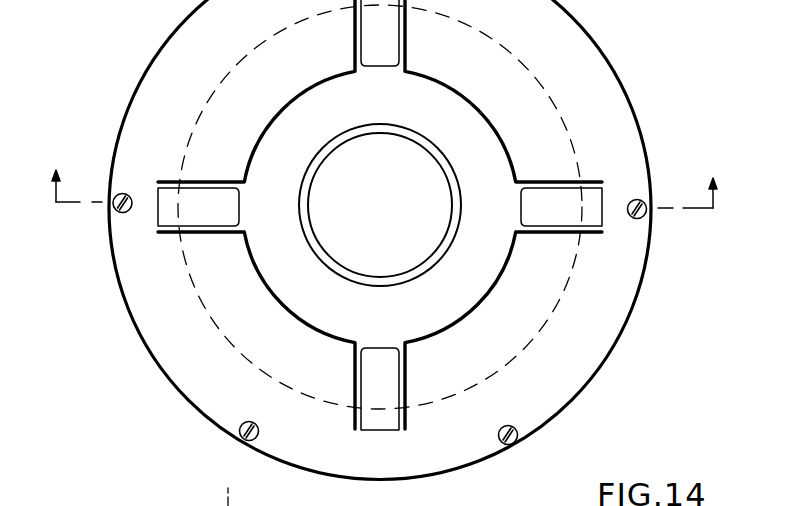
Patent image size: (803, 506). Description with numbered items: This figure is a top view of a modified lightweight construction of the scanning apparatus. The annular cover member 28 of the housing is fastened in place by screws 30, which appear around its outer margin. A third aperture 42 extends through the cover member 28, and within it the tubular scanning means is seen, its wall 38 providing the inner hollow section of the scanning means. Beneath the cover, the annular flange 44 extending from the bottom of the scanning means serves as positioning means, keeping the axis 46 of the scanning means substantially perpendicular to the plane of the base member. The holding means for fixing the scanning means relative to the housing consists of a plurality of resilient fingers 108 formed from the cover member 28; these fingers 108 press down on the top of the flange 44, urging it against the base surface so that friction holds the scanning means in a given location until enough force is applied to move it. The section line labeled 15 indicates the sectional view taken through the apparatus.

The section line 15- 15 is at (385, 178).
The annular cover member 28 is at (600, 342).
The screws 30 is at (118, 213).
The wall 38 is at (452, 232).
The third aperture 42 is at (290, 107).
The annular flange 44 is at (319, 290).
The axis 46 is at (228, 503).
The resilient fingers 108 is at (380, 52).